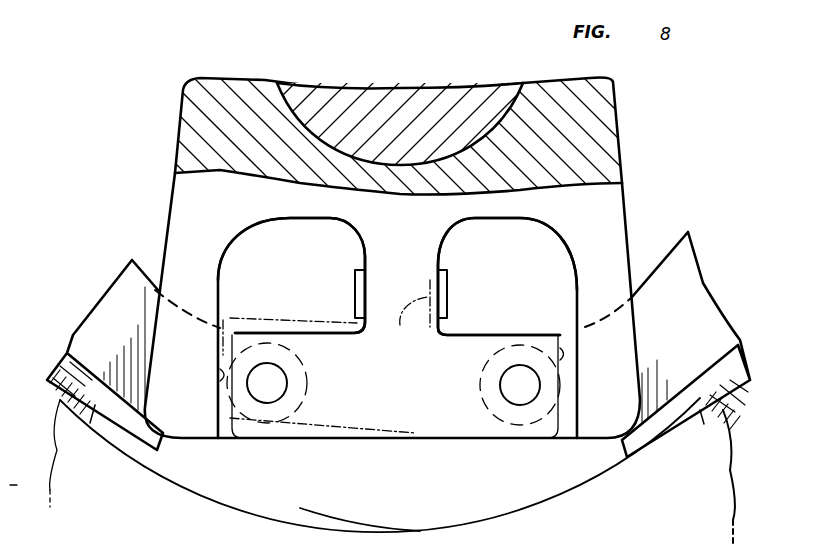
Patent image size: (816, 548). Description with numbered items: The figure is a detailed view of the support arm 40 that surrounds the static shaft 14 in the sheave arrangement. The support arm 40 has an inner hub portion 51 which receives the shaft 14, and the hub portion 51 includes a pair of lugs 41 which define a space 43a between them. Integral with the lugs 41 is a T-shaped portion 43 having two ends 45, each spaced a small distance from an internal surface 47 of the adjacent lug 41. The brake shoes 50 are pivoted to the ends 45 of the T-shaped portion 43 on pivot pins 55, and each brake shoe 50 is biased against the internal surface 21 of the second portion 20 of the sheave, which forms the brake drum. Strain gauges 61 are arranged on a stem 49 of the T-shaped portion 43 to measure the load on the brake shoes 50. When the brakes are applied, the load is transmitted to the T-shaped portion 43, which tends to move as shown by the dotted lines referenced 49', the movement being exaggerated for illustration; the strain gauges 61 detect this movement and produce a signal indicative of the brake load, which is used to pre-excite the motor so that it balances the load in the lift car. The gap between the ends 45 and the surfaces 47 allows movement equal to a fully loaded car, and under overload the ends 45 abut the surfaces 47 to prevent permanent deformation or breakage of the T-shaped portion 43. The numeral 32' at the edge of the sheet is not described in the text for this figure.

The static shaft 14 is at (368, 97).
The inner hub portion 51 is at (603, 112).
The brake shoe 50 is at (123, 282).
The support arm 40 is at (610, 232).
The lug 41 is at (173, 327).
The space 43a is at (240, 264).
The T-shaped portion 43 is at (412, 250).
The stem 49 is at (502, 276).
The strain gauge 61 is at (355, 278).
The moved position of T-shaped portion 49' is at (326, 356).
The internal surface 47 is at (220, 371).
The end 45 is at (228, 354).
The pivot pin 55 is at (270, 383).
The internal surface 21 is at (362, 527).
The second portion 20 is at (503, 545).
The adjacent figure numeral 32' is at (88, 7).